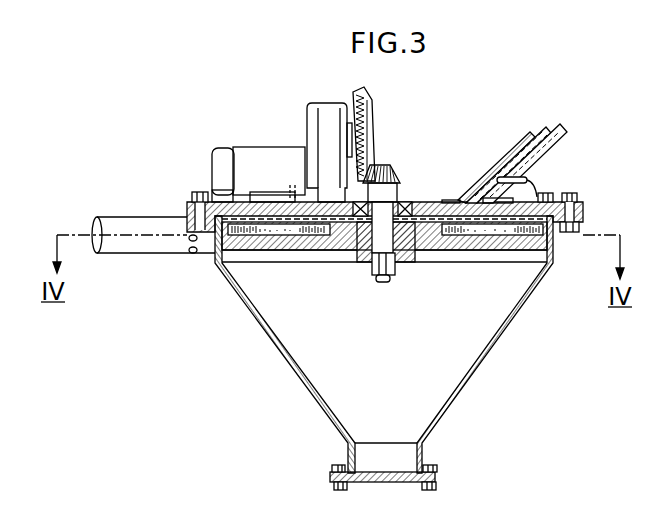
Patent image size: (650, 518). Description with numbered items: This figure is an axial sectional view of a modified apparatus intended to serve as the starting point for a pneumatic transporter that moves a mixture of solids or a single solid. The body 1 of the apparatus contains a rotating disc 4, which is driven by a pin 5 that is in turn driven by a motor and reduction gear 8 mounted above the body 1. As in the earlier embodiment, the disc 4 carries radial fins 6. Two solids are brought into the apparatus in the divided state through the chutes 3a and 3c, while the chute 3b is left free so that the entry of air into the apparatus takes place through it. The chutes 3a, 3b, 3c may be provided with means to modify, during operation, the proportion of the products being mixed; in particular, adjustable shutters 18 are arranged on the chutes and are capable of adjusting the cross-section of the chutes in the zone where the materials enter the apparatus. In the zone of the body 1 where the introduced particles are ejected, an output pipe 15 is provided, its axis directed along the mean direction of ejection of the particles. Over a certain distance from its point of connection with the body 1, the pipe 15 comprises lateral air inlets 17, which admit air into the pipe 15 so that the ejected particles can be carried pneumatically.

The body 1 is at (282, 360).
The chute 3a is at (512, 157).
The chute 3b is at (535, 150).
The chute 3c is at (558, 132).
The rotating disc 4 is at (433, 250).
The pin 5 is at (383, 238).
The radial fins 6 is at (503, 228).
The motor and reduction gear 8 is at (291, 142).
The output pipe 15 is at (142, 227).
The lateral air inlets 17 is at (198, 236).
The adjustable shutters 18 is at (473, 190).